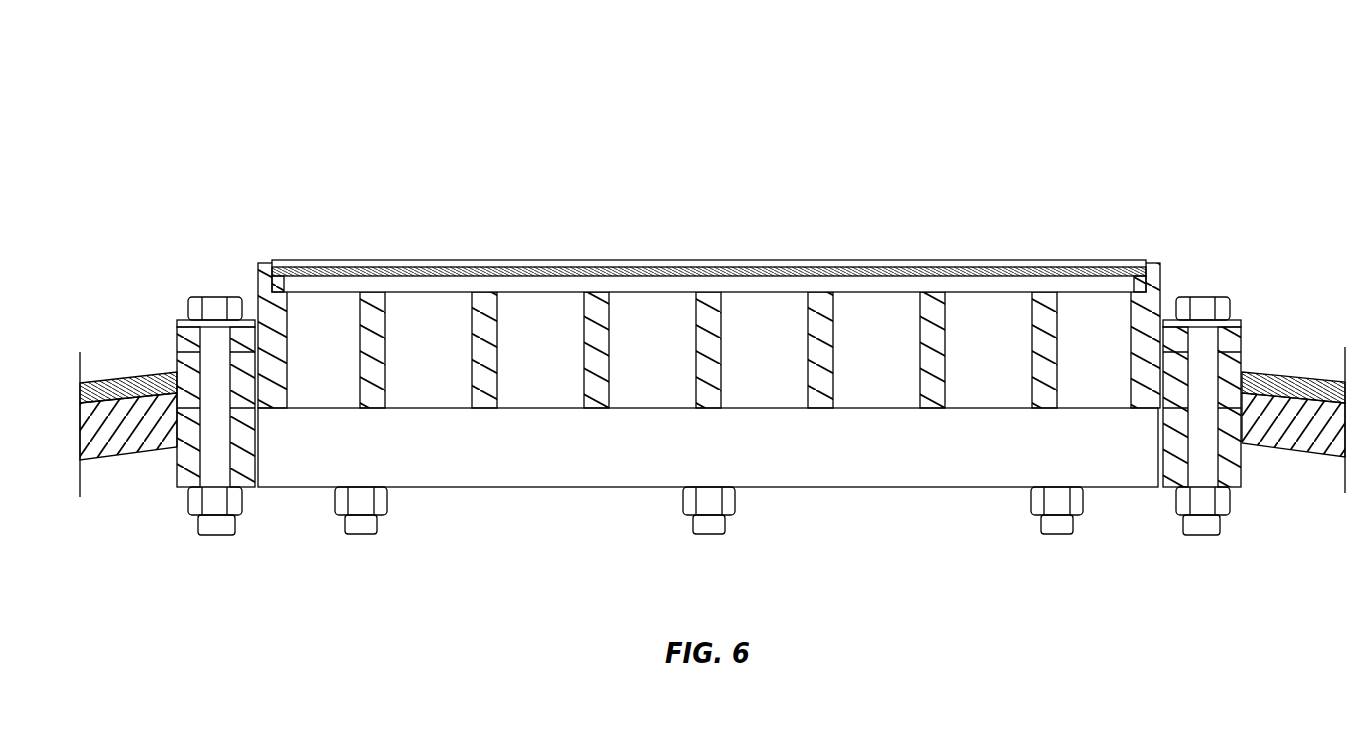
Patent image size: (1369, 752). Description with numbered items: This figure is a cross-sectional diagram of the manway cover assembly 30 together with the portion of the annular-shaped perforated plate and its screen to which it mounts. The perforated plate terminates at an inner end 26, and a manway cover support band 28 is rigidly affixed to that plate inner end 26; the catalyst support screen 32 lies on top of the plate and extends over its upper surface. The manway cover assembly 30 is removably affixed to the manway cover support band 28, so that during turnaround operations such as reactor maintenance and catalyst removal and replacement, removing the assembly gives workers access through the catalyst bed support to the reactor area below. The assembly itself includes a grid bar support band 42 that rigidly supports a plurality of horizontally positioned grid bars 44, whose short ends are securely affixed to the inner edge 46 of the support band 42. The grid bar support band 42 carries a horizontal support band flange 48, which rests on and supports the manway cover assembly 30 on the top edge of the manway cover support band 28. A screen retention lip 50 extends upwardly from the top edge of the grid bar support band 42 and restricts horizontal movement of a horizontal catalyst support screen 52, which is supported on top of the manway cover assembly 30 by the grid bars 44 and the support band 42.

The manway cover assembly 30 is at (276, 95).
The inner end 26 is at (126, 455).
The manway cover support band 28 is at (178, 472).
The catalyst support screen 32 is at (135, 377).
The grid bar support band 42 is at (277, 352).
The grid bars 44 is at (942, 408).
The inner edge 46 is at (1127, 335).
The horizontal support band flange 48 is at (177, 340).
The screen retention lip 50 is at (260, 268).
The horizontal catalyst support screen 52 is at (590, 262).